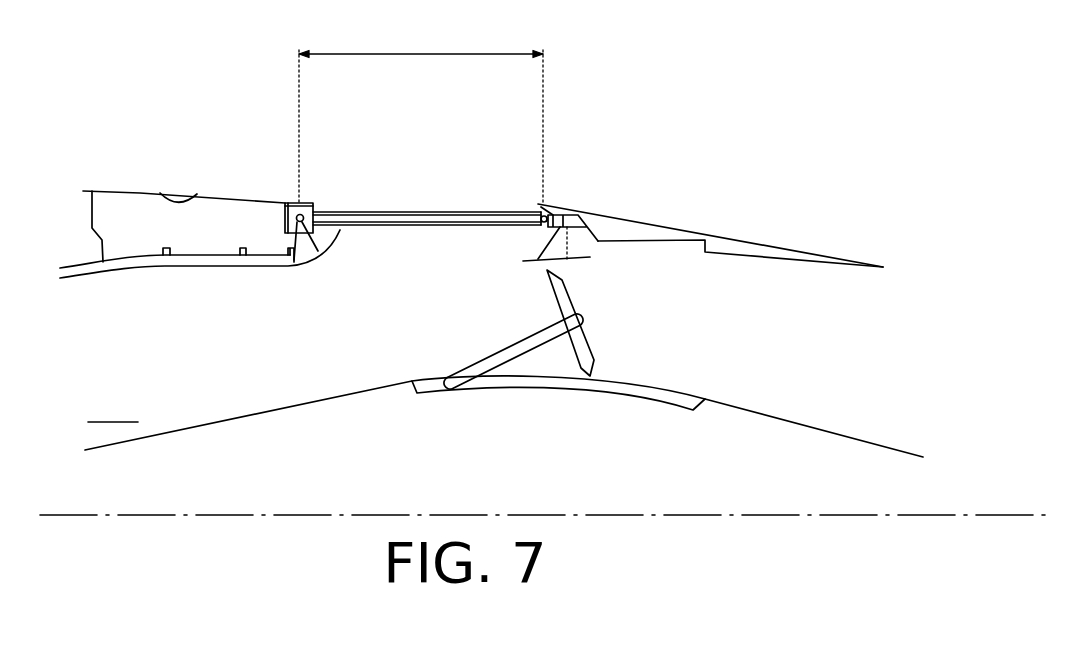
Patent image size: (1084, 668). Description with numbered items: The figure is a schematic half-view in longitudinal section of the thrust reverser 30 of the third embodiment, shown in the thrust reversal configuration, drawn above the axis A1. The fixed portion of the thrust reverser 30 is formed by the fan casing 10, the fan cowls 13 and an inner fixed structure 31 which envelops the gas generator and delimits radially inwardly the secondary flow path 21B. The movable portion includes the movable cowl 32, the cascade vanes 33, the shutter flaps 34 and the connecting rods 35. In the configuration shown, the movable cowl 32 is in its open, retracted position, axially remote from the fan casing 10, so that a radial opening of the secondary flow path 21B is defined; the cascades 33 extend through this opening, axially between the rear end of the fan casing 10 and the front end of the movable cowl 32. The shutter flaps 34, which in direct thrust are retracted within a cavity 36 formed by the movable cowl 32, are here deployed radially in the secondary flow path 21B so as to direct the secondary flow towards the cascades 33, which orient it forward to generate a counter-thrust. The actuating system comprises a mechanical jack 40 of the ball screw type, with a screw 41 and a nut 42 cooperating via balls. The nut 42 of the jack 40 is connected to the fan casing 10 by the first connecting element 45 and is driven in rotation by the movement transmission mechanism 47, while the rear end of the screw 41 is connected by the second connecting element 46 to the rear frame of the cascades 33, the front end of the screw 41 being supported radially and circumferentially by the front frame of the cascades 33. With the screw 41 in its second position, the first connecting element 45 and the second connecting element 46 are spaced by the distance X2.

The fan casing 10 is at (84, 280).
The fan cowls 13 is at (138, 191).
The secondary flow path 21B is at (113, 408).
The thrust reverser 30 is at (620, 128).
The inner fixed structure 31 is at (248, 416).
The movable cowl 32 is at (667, 226).
The cascade vanes 33 is at (497, 212).
The shutter flaps 34 is at (588, 345).
The connecting rods 35 is at (508, 349).
The cavity 36 is at (665, 242).
The mechanical jack 40 is at (452, 118).
The screw 41 is at (457, 211).
The nut 42 is at (304, 203).
The first connecting element 45 is at (272, 234).
The second connecting element 46 is at (553, 206).
The movement transmission mechanism 47 is at (320, 244).
The engine axis A1 is at (50, 517).
The distance X2 is at (421, 116).